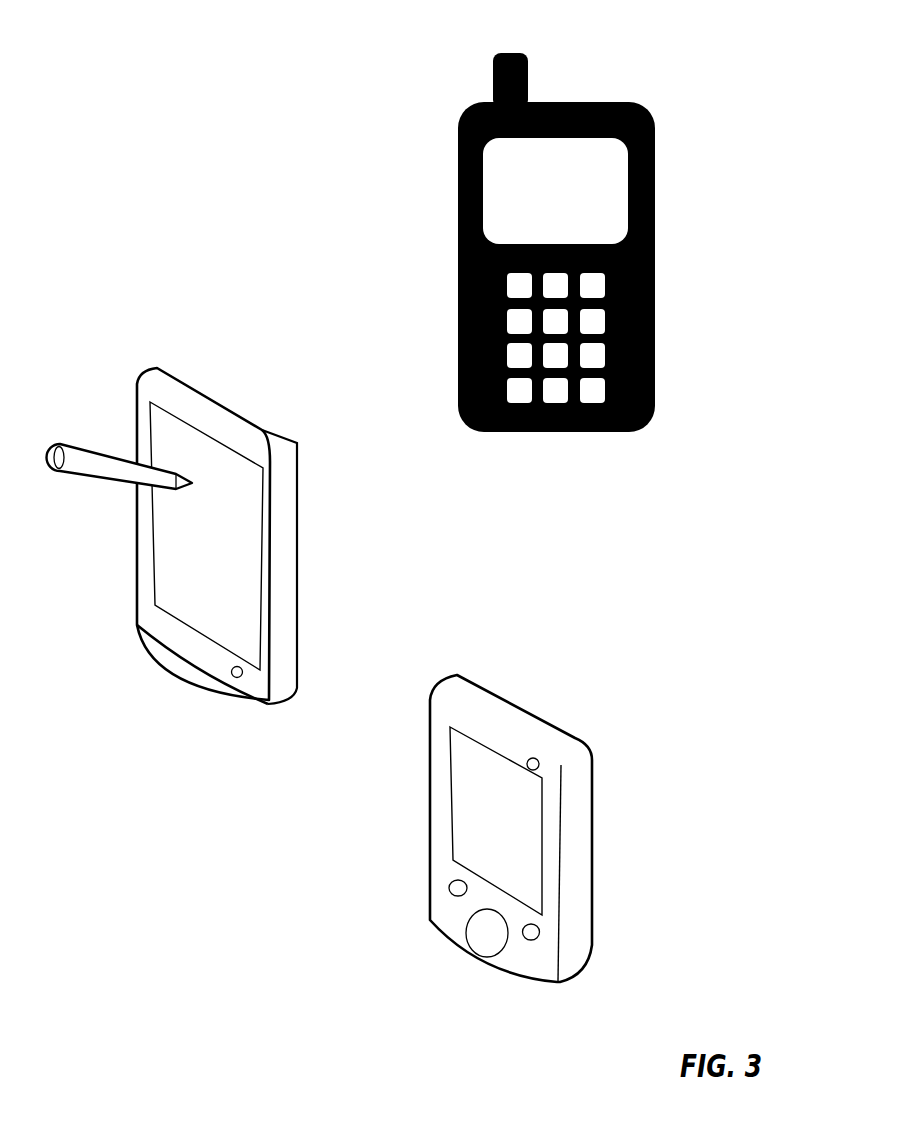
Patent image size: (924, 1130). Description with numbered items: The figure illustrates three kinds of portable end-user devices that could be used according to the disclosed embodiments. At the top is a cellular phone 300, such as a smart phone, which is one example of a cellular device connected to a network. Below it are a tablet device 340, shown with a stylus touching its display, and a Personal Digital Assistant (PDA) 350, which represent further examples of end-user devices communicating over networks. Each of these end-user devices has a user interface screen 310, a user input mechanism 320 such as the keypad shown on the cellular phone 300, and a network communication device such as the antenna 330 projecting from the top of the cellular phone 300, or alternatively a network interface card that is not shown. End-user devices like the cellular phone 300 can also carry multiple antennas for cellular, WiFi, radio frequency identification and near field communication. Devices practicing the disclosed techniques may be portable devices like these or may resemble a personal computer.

The cellular phone 300 is at (428, 183).
The user interface screen 310 is at (598, 173).
The user input mechanism 320 is at (593, 350).
The antenna 330 is at (503, 55).
The tablet device 340 is at (232, 402).
The Personal Digital Assistant (PDA) 350 is at (528, 703).